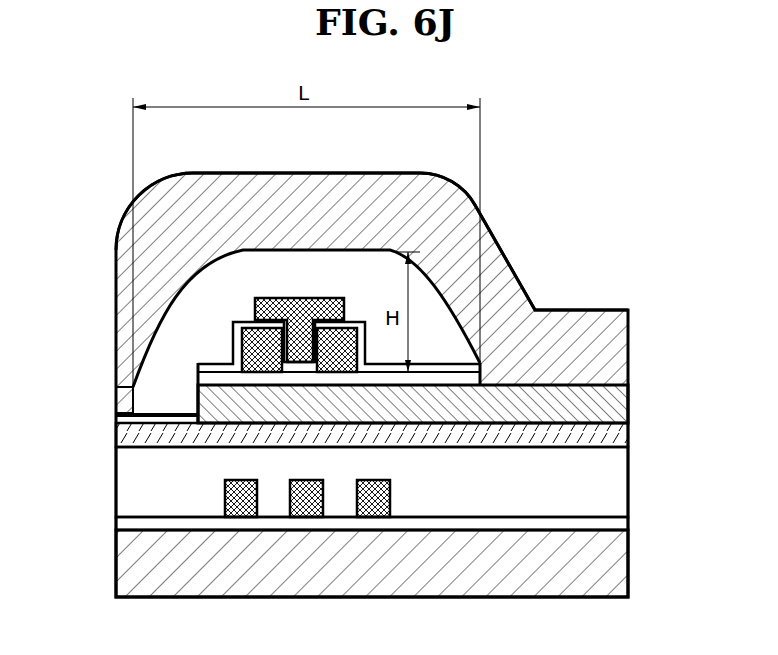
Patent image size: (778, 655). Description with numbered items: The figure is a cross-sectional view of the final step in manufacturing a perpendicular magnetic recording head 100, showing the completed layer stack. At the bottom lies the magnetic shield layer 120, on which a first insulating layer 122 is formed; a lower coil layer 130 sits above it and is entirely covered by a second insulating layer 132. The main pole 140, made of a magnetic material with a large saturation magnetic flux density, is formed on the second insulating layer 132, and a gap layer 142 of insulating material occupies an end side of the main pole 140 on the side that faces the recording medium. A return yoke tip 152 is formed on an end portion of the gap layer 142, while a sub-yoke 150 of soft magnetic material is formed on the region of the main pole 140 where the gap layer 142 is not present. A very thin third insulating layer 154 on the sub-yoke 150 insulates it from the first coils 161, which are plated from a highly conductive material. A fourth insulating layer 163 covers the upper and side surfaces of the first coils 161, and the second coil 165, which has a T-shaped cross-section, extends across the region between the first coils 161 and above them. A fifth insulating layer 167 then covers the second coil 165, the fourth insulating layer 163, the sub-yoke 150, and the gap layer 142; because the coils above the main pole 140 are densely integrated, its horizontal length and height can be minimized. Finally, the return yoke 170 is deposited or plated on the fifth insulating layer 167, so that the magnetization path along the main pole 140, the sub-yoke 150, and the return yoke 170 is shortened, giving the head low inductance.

The perpendicular magnetic recording head 100 is at (610, 170).
The magnetic shield layer 120 is at (617, 570).
The first insulating layer 122 is at (612, 525).
The lower coil layer 130 is at (365, 517).
The second insulating layer 132 is at (612, 487).
The main pole 140 is at (612, 437).
The gap layer 142 is at (125, 418).
The sub-yoke 150 is at (610, 407).
The return yoke tip 152 is at (125, 398).
The third insulating layer 154 is at (452, 382).
The first coils 161 is at (270, 343).
The fourth insulating layer 163 is at (438, 363).
The second coil 165 is at (277, 298).
The fifth insulating layer 167 is at (165, 357).
The return yoke 170 is at (480, 247).